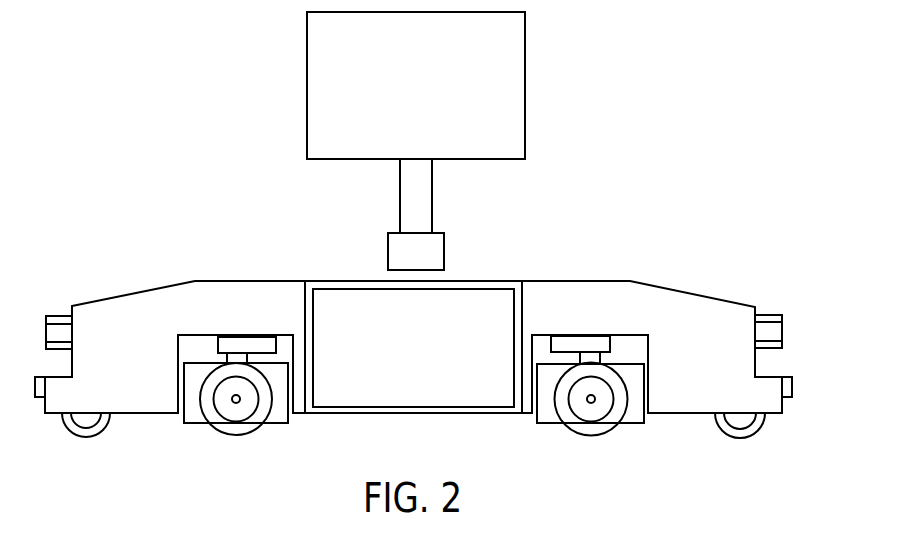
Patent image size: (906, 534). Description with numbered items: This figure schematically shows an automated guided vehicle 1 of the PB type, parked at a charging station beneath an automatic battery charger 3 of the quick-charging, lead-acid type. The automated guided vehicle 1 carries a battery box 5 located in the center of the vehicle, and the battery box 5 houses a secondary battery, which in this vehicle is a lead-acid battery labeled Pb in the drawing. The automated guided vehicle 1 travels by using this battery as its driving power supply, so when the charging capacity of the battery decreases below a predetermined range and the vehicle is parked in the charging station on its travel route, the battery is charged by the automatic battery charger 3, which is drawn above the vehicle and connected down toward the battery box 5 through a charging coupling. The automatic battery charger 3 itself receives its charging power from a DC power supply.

The automated guided vehicle 1 is at (221, 273).
The automatic battery charger 3 is at (510, 111).
The battery box 5 is at (499, 276).